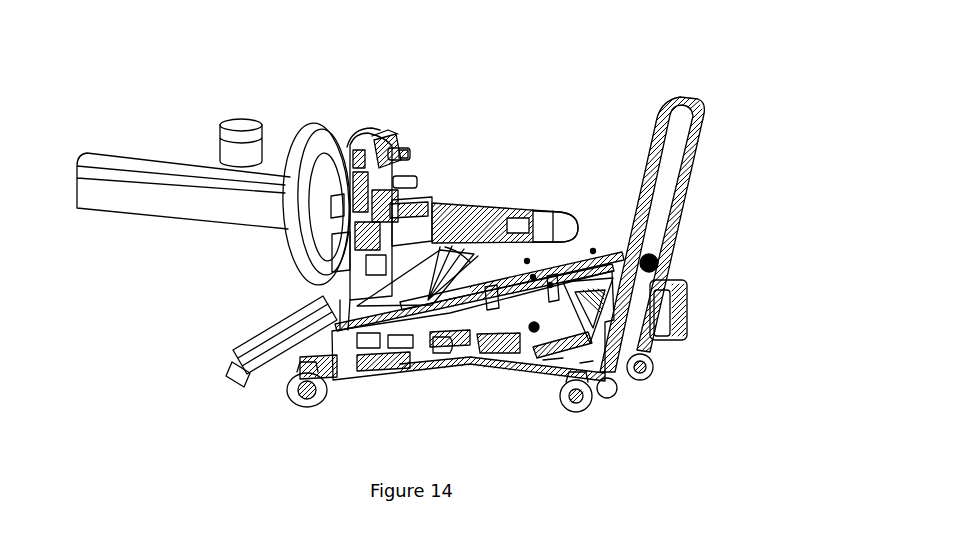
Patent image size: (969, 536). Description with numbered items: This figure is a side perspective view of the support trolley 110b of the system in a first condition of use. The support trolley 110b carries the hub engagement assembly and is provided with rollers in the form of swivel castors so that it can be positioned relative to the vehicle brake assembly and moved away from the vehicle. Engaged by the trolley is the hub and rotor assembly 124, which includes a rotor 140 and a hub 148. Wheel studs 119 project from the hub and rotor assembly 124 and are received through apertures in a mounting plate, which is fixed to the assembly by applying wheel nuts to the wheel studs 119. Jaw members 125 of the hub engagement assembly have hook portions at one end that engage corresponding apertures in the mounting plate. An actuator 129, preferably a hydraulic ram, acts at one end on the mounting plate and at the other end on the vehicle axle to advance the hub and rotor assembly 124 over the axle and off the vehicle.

The hub and rotor assembly 124 is at (361, 112).
The hub 148 is at (378, 139).
The wheel studs 119 is at (411, 157).
The jaw members 125 is at (434, 201).
The actuator 129 is at (568, 207).
The support trolley 110b is at (702, 238).
The rotor 140 is at (290, 273).